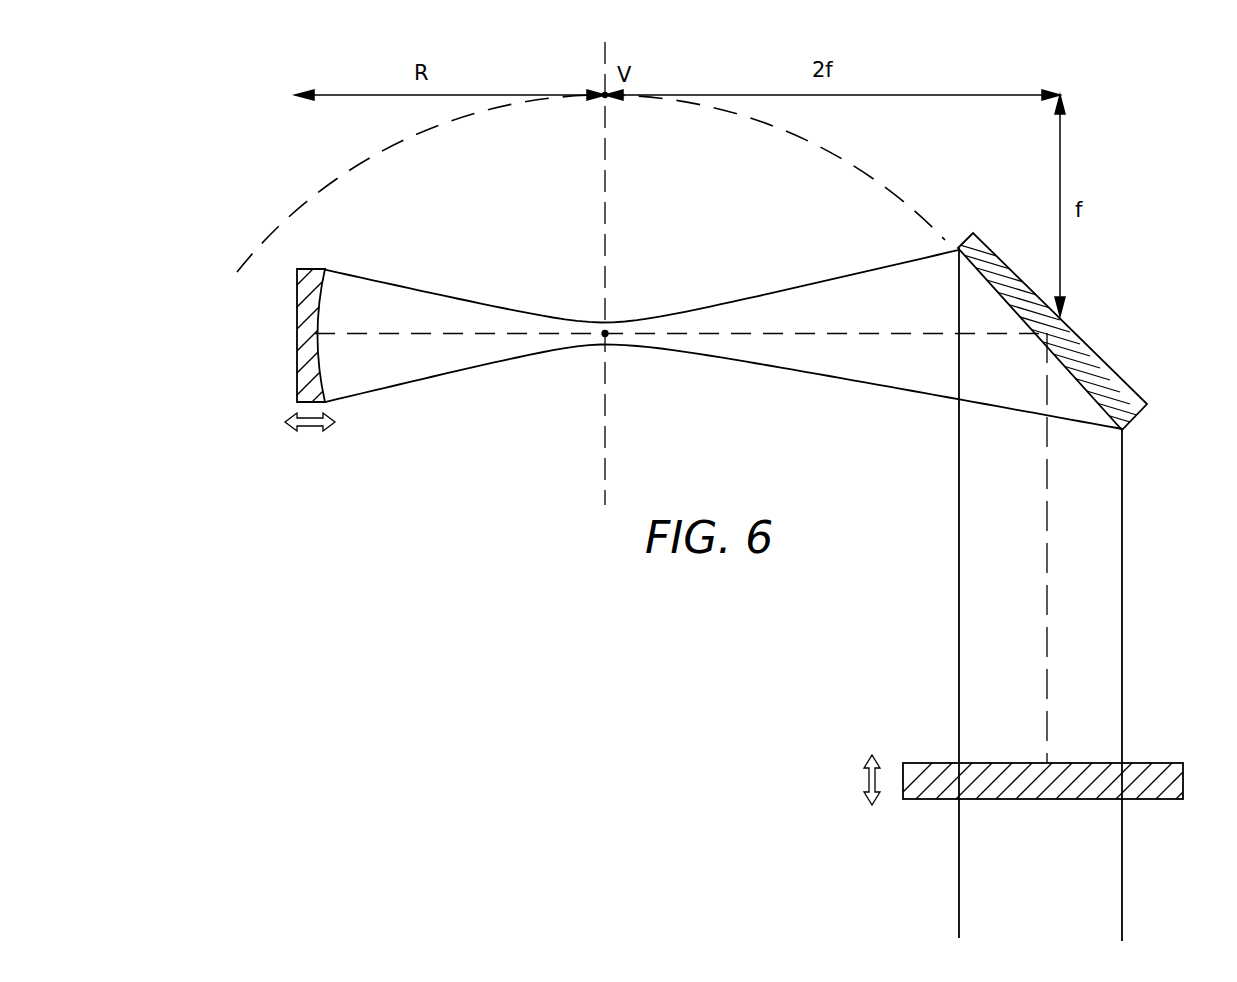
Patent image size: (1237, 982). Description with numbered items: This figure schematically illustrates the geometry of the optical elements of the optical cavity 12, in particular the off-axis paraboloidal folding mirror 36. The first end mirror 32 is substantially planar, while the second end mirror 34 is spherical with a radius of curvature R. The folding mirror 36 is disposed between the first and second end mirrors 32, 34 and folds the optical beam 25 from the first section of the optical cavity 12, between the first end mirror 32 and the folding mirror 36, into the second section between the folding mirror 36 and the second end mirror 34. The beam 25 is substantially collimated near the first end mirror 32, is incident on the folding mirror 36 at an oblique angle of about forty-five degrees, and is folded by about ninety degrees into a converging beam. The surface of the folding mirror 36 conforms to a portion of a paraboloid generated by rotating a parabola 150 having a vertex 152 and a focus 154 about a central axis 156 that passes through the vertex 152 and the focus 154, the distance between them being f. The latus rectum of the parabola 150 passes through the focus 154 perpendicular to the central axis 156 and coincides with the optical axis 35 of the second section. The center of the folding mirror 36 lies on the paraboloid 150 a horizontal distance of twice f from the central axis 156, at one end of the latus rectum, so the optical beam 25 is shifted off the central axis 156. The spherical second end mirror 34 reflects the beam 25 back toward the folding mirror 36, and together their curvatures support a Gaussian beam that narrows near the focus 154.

The optical cavity 12 is at (203, 120).
The optical beam 25 is at (1124, 622).
The first end mirror 32 is at (1146, 763).
The second end mirror 34 is at (298, 366).
The optical axis 35 is at (867, 330).
The folding mirror 36 is at (1105, 362).
The parabola 150 is at (285, 232).
The vertex 152 is at (604, 92).
The focus 154 is at (605, 332).
The central axis 156 is at (605, 442).